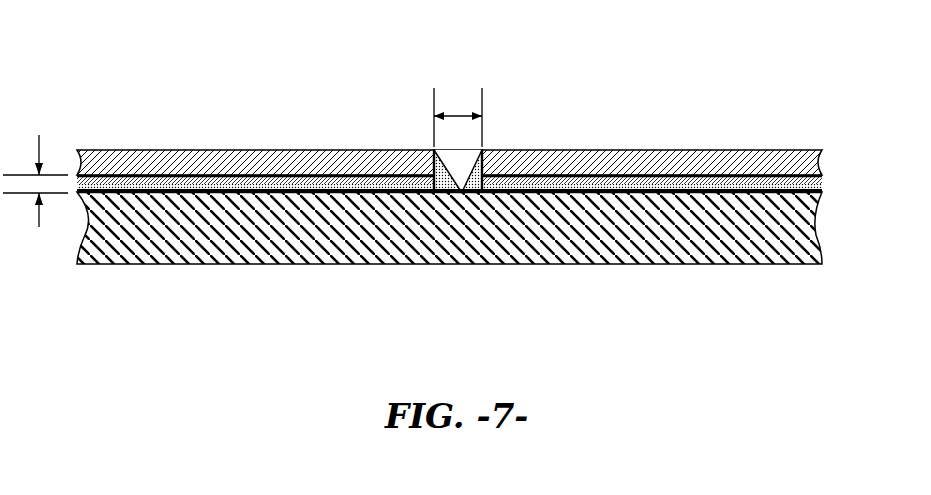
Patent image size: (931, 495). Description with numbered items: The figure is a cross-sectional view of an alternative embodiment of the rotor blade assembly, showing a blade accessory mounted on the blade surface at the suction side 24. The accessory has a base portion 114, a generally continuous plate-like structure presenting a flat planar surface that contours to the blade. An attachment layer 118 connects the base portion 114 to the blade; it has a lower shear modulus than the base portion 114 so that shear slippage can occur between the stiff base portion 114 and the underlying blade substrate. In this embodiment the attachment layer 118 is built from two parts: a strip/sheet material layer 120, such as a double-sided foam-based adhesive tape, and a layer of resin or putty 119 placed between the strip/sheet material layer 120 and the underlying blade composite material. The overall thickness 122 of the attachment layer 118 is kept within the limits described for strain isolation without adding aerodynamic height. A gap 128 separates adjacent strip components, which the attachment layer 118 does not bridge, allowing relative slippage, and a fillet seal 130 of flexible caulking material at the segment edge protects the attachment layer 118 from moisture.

The suction side 24 is at (218, 247).
The base portion 114 is at (740, 162).
The attachment layer 118 is at (333, 175).
The layer of resin or putty 119 is at (658, 192).
The strip/sheet material layer 120 is at (223, 182).
The thickness 122 is at (42, 155).
The gap 128 is at (460, 110).
The fillet seal 130 is at (481, 177).